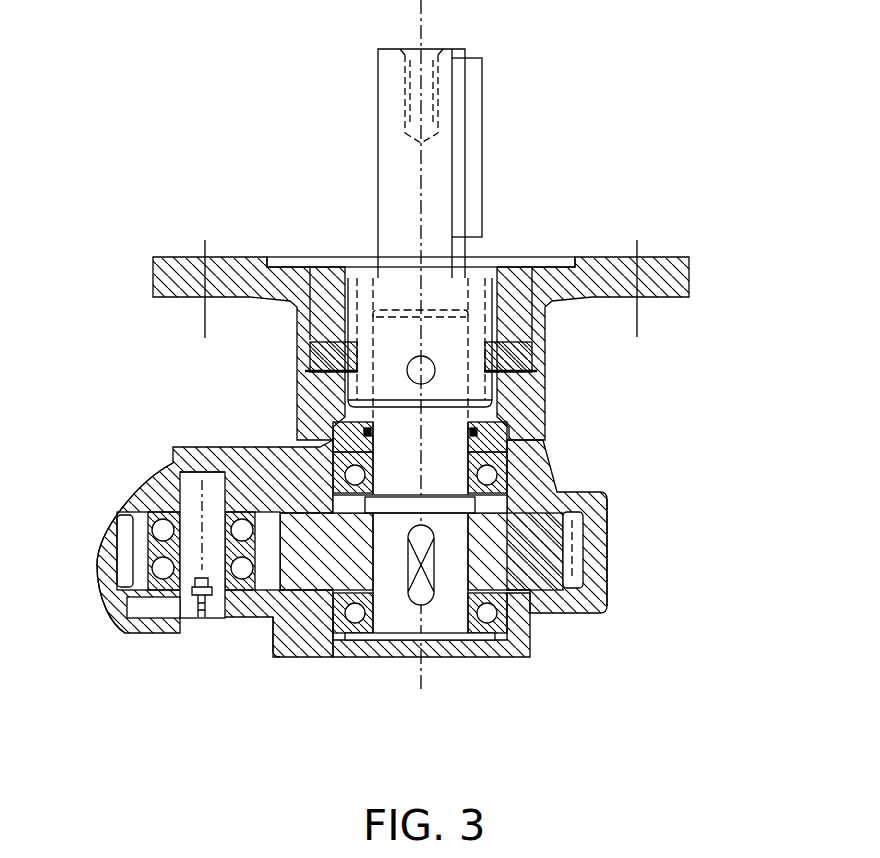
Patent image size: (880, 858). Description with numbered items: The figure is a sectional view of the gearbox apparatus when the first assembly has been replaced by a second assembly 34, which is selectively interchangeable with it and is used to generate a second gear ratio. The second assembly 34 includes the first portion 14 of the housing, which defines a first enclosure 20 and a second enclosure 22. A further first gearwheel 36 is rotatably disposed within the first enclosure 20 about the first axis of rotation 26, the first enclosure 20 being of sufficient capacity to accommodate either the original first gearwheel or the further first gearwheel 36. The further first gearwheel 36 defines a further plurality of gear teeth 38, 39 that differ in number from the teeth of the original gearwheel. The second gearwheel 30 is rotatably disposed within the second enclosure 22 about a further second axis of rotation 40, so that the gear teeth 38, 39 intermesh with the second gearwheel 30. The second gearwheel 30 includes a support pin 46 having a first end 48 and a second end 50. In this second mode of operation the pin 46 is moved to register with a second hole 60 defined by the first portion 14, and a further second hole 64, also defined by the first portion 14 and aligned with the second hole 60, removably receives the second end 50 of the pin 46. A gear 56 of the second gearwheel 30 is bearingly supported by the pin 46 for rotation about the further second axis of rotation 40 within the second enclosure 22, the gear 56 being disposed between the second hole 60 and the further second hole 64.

The first portion 14 is at (630, 555).
The first enclosure 20 is at (604, 500).
The second enclosure 22 is at (262, 505).
The first axis of rotation 26 is at (422, 163).
The second gearwheel 30 is at (128, 592).
The second assembly 34 is at (256, 642).
The further first gearwheel 36 is at (533, 572).
The further plurality of gear teeth 38 is at (577, 572).
The further plurality of gear teeth 39 is at (298, 572).
The further second axis of rotation 40 is at (125, 507).
The support pin 46 is at (185, 543).
The first end 48 is at (205, 473).
The second end 50 is at (175, 618).
The gear 56 is at (275, 513).
The second hole 60 is at (245, 505).
The further second hole 64 is at (208, 618).